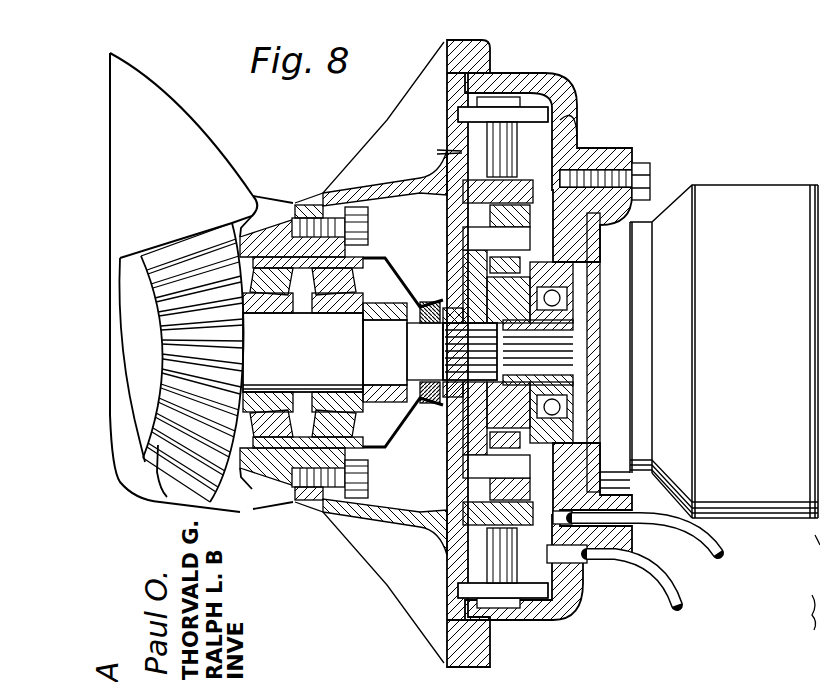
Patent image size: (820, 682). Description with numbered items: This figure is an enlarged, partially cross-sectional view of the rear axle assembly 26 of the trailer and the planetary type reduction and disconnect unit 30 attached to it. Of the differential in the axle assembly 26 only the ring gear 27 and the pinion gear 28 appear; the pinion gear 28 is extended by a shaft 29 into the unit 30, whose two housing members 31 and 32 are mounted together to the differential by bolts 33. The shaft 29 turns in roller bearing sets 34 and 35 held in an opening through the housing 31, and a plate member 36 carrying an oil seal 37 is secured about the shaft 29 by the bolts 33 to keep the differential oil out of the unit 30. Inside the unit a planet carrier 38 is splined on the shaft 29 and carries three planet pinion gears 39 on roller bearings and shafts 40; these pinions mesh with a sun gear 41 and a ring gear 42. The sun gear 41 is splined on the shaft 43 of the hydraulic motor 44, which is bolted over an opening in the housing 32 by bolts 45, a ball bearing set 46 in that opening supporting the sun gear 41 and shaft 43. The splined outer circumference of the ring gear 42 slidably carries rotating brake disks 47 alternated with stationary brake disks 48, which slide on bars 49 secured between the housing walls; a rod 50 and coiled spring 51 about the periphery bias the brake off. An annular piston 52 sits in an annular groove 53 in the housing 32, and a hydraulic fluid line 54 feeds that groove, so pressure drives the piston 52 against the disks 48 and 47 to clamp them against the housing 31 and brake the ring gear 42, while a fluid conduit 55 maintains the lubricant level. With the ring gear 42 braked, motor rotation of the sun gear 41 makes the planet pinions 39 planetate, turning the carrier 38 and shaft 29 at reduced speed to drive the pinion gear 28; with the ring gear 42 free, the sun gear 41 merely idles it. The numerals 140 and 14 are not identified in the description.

The rear axle assembly 26 is at (183, 160).
The ring gear 27 is at (158, 492).
The pinion gear 28 is at (182, 361).
The shaft 29 is at (320, 362).
The reduction and disconnect unit 30 is at (422, 645).
The housing member 31 is at (444, 72).
The housing member 32 is at (496, 93).
The bolts 33 is at (368, 226).
The roller bearing set 34 is at (252, 312).
The roller bearing set 35 is at (318, 305).
The plate member 36 is at (406, 272).
The oil seal 37 is at (407, 322).
The planet carrier 38 is at (462, 300).
The planet pinion gears 39 is at (522, 212).
The roller bearings and shafts 40 is at (470, 240).
The sun gear 41 is at (483, 440).
The ring gear 42 is at (465, 206).
The shaft 43 is at (548, 360).
The hydraulic motor 44 is at (780, 272).
The bolts 45 is at (650, 175).
The ball bearing set 46 is at (628, 408).
The brake disks 47 is at (437, 152).
The stationary brake disks 48 is at (495, 177).
The bars 49 is at (548, 108).
The rod 50 is at (470, 587).
The coiled spring 51 is at (477, 603).
The annular piston 52 is at (553, 140).
The annular groove 53 is at (575, 148).
The hydraulic fluid line 54 is at (637, 567).
The fluid conduit 55 is at (700, 547).
The conduit 140 is at (819, 625).
The frame 14 is at (808, 526).